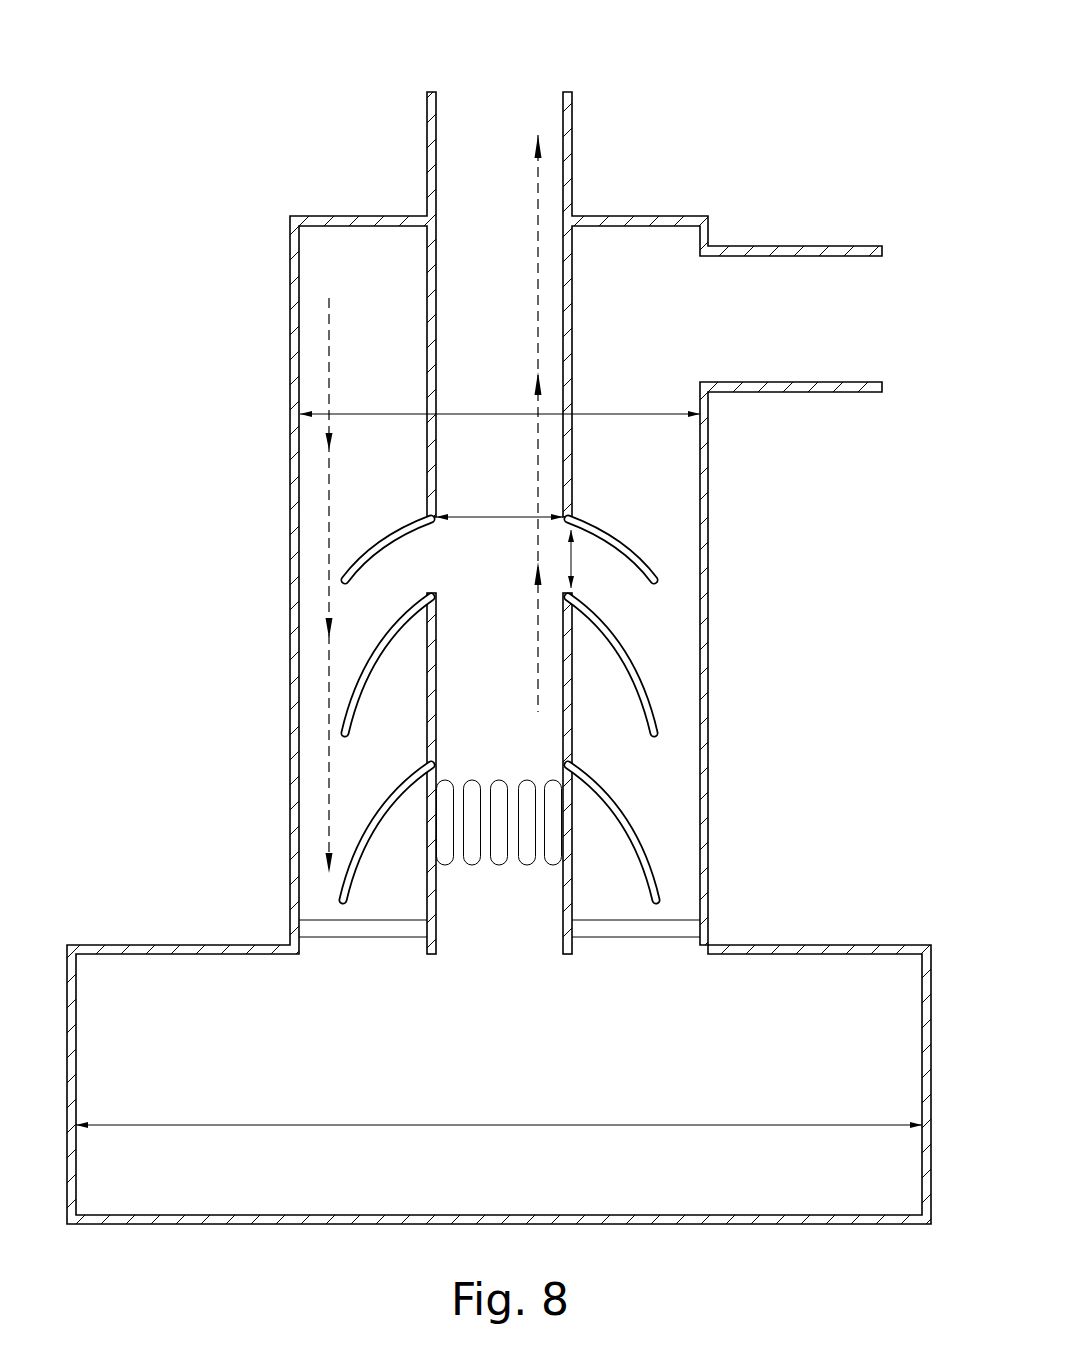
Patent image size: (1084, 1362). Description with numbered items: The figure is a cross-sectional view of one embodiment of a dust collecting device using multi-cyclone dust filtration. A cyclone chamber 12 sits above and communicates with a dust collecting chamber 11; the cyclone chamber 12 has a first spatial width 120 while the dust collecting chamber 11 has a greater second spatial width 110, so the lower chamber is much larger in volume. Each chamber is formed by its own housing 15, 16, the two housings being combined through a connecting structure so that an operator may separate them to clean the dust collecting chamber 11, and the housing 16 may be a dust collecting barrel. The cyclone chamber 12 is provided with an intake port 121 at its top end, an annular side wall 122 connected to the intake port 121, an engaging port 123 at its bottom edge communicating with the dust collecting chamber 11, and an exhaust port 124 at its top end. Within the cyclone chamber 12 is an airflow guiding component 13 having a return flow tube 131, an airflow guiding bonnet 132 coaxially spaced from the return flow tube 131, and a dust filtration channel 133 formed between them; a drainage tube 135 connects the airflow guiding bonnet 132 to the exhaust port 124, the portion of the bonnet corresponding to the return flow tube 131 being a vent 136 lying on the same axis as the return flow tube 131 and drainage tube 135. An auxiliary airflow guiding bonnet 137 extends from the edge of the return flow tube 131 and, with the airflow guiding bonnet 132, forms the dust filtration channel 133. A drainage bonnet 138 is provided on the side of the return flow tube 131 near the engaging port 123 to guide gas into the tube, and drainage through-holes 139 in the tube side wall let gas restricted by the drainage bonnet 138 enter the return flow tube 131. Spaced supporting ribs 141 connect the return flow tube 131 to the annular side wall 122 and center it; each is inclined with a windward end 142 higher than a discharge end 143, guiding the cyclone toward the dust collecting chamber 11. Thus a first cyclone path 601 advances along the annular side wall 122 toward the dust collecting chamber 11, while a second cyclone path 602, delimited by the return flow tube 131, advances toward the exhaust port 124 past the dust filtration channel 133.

The dust collecting chamber 11 is at (258, 1205).
The cyclone chamber 12 is at (317, 275).
The airflow guiding component 13 is at (474, 758).
The housing 15 is at (297, 490).
The housing 16 is at (878, 945).
The second spatial width 110 is at (499, 1109).
The first spatial width 120 is at (500, 401).
The intake port 121 is at (828, 246).
The annular side wall 122 is at (700, 712).
The engaging port 123 is at (695, 952).
The exhaust port 124 is at (427, 150).
The return flow tube 131 is at (430, 690).
The airflow guiding bonnet 132 is at (365, 566).
The dust filtration channel 133 is at (578, 560).
The drainage tube 135 is at (574, 468).
The vent 136 is at (503, 539).
The auxiliary airflow guiding bonnet 137 is at (640, 655).
The drainage bonnet 138 is at (640, 826).
The drainage through-hole 139 is at (500, 856).
The supporting rib 141 is at (672, 930).
The windward end 142 is at (323, 920).
The discharge end 143 is at (337, 938).
The first cyclone path 601 is at (329, 356).
The second cyclone path 602 is at (540, 270).